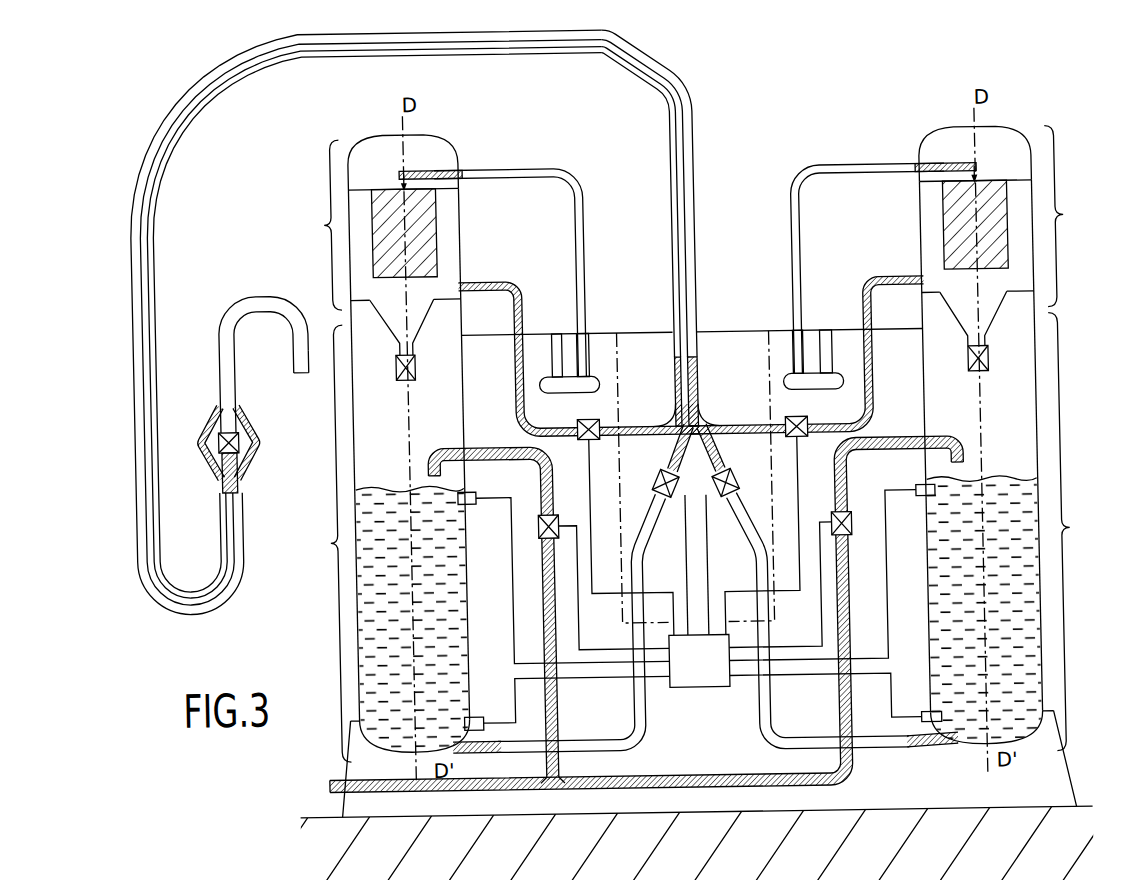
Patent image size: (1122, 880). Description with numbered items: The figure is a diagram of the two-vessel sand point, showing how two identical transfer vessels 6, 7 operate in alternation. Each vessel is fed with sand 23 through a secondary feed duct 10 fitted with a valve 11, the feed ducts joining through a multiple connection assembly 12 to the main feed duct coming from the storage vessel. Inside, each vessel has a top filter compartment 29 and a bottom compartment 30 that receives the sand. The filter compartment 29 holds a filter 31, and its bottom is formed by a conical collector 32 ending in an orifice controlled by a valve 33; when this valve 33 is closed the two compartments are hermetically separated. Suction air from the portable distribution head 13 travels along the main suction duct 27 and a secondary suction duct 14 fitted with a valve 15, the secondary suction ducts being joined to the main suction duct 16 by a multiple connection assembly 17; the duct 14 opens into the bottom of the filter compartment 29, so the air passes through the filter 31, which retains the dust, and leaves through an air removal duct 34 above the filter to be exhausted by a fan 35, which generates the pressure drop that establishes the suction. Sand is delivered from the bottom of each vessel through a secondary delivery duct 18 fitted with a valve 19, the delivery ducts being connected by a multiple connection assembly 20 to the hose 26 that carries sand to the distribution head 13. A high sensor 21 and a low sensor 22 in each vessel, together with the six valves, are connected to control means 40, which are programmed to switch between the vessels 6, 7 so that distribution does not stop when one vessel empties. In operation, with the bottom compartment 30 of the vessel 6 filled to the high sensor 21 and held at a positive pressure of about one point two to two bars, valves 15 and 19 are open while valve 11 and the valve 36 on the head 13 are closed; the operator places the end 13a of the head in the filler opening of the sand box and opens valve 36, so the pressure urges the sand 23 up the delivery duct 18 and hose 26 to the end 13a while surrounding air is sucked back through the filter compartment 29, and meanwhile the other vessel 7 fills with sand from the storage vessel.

The first transfer vessel 6 is at (472, 134).
The second transfer vessel 7 is at (924, 130).
The secondary feed duct 10 is at (540, 616).
The valve 11 is at (537, 522).
The multiple connection assembly 12 is at (549, 799).
The portable distribution head 13 is at (199, 388).
The end of distribution head 13a is at (303, 369).
The secondary suction duct 14 is at (516, 386).
The valve 15 is at (588, 440).
The main suction duct 16 is at (630, 54).
The multiple connection assembly 17 is at (660, 392).
The secondary delivery duct 18 is at (637, 738).
The valve 19 is at (658, 498).
The multiple connection assembly 20 is at (708, 410).
The high sensor 21 is at (470, 503).
The low sensor 22 is at (475, 713).
The sand 23 is at (401, 577).
The hose 26 is at (198, 100).
The main suction duct 27 is at (221, 114).
The top filter compartment 29 is at (696, 221).
The bottom compartment 30 is at (704, 537).
The filter 31 is at (441, 226).
The conical collector 32 is at (384, 316).
The valve 33 is at (402, 376).
The air removal duct 34 is at (572, 167).
The fan 35 is at (560, 332).
The valve 36 is at (244, 452).
The control means 40 is at (683, 674).